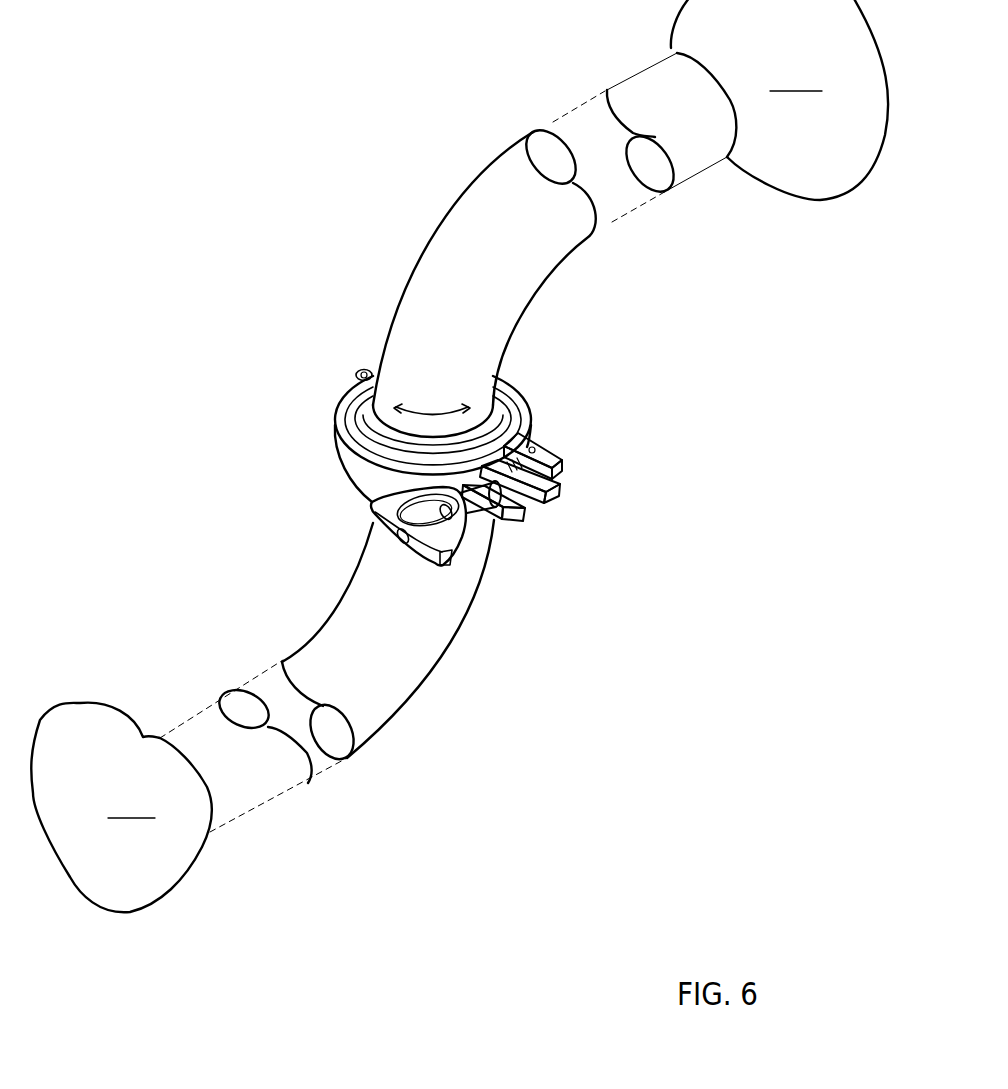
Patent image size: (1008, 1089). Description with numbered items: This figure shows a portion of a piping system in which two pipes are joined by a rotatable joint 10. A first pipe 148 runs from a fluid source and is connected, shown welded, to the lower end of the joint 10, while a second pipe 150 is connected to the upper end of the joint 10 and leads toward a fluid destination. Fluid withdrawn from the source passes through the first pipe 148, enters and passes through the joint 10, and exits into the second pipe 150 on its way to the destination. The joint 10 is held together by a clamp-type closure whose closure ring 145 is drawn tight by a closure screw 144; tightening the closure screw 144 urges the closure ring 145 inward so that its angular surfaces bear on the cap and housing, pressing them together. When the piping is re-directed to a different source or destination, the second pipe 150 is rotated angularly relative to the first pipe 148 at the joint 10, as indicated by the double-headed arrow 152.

The rotatable joint 10 is at (421, 446).
The closure screw 144 is at (371, 508).
The closure ring 145 is at (514, 385).
The first pipe 148 is at (408, 655).
The second pipe 150 is at (510, 260).
The double-headed arrow 152 is at (437, 410).